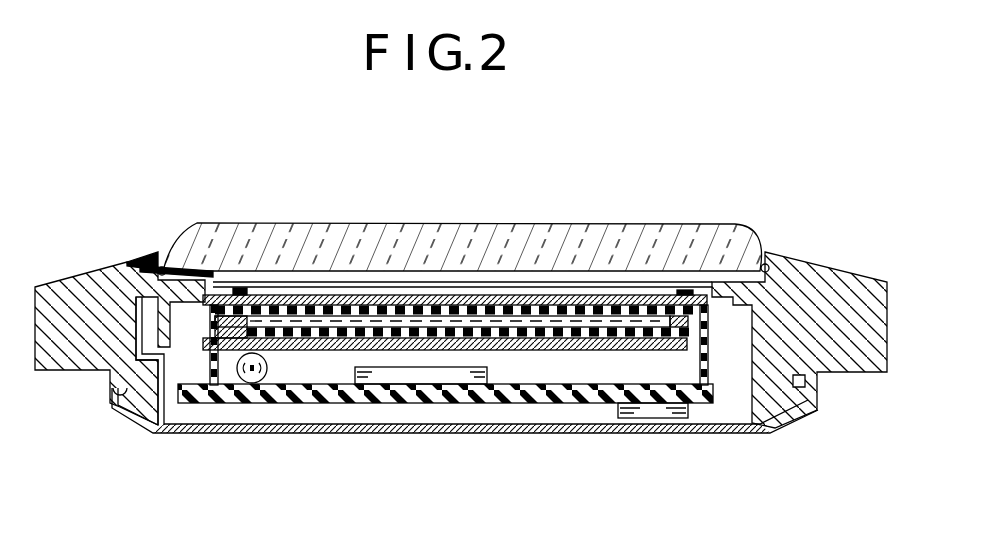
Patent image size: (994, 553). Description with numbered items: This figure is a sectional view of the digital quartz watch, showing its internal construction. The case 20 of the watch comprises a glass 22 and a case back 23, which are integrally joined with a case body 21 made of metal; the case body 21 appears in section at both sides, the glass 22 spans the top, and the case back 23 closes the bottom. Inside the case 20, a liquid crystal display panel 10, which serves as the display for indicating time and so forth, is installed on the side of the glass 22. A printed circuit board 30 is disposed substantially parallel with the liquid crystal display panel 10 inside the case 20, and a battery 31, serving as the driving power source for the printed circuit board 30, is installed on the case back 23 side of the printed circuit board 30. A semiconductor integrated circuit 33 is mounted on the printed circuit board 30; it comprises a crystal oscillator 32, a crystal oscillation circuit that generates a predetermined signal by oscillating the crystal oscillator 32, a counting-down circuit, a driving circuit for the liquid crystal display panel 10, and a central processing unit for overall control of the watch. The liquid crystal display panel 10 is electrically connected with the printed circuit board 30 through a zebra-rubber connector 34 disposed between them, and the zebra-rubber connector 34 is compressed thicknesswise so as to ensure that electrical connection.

The case 20 is at (150, 216).
The liquid crystal display panel 10 is at (382, 293).
The case body 21 is at (834, 280).
The glass 22 is at (639, 232).
The case back 23 is at (783, 428).
The printed circuit board 30 is at (547, 403).
The battery 31 is at (657, 418).
The crystal oscillator 32 is at (253, 384).
The semiconductor integrated circuit 33 is at (425, 385).
The zebra-rubber connector 34 is at (212, 352).